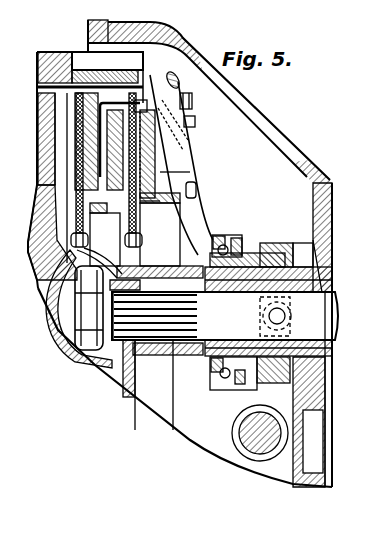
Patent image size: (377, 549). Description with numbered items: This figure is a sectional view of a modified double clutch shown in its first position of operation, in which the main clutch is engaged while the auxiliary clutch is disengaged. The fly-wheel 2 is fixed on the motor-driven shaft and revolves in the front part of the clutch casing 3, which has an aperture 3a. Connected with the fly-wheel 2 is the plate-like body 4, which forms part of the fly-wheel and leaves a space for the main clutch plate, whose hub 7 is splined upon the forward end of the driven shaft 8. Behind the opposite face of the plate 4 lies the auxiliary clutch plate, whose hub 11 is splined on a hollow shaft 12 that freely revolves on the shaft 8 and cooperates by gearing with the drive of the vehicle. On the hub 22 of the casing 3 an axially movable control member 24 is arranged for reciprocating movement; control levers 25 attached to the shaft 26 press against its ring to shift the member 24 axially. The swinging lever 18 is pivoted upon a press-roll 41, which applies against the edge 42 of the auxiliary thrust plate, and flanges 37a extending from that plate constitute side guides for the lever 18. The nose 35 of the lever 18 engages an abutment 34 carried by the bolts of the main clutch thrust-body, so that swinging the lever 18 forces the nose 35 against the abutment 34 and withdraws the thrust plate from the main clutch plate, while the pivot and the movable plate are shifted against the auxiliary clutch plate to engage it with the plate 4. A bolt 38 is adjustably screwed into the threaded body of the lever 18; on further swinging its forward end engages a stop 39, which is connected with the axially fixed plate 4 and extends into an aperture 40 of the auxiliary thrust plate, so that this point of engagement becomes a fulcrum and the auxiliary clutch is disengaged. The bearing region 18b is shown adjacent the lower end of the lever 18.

The fly-wheel 2 is at (40, 117).
The clutch casing 3 is at (132, 33).
The aperture 3a is at (287, 118).
The plate-like body 4 is at (90, 70).
The hub 7 is at (100, 372).
The driven shaft 8 is at (225, 316).
The hub 11 is at (150, 265).
The hollow shaft 12 is at (313, 300).
The lever 18 is at (192, 185).
The lever bearing 18b is at (208, 245).
The hub of the clutch casing 22 is at (283, 248).
The control member 24 is at (263, 248).
The control lever 25 is at (245, 393).
The shaft 26 is at (250, 434).
The abutment 34 is at (177, 82).
The nose 35 is at (193, 105).
The flange 37a is at (178, 175).
The bolt 38 is at (186, 136).
The stop 39 is at (140, 100).
The aperture 40 is at (184, 156).
The press-roll 41 is at (195, 122).
The edge 42 is at (178, 47).